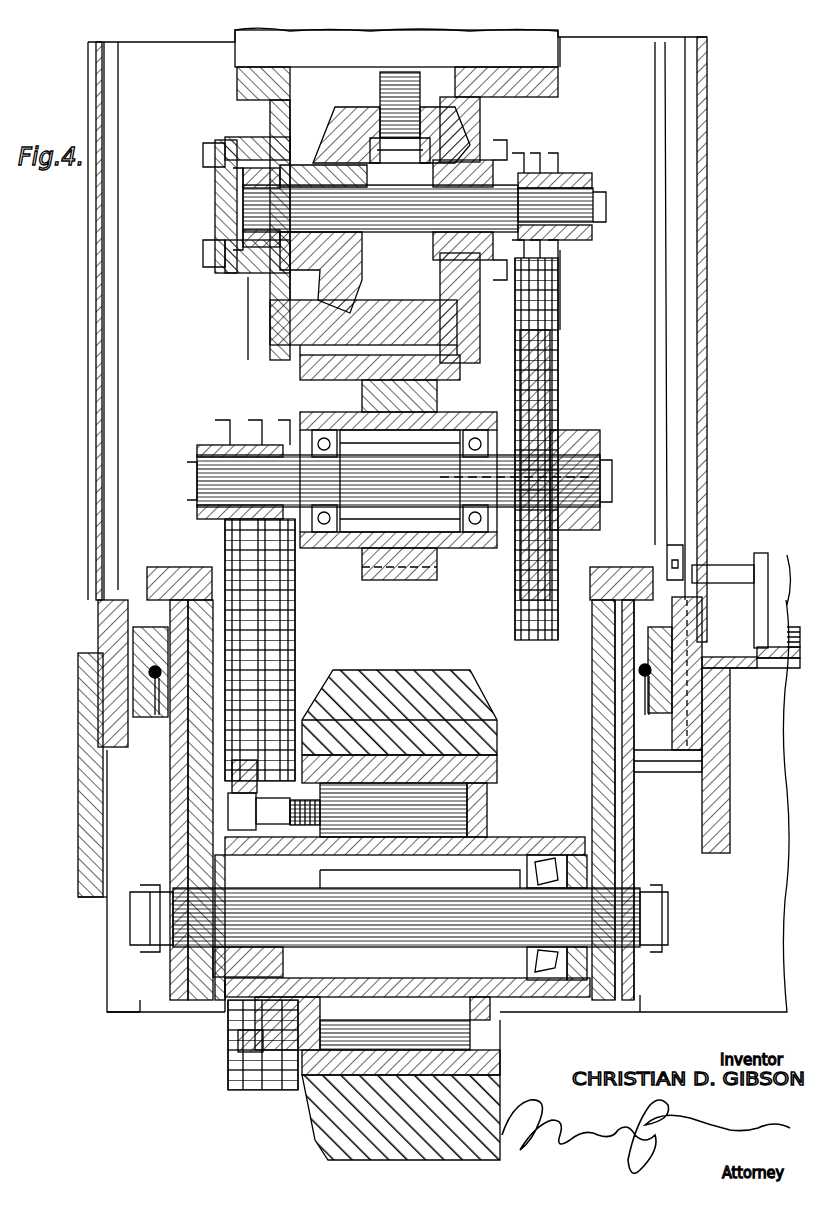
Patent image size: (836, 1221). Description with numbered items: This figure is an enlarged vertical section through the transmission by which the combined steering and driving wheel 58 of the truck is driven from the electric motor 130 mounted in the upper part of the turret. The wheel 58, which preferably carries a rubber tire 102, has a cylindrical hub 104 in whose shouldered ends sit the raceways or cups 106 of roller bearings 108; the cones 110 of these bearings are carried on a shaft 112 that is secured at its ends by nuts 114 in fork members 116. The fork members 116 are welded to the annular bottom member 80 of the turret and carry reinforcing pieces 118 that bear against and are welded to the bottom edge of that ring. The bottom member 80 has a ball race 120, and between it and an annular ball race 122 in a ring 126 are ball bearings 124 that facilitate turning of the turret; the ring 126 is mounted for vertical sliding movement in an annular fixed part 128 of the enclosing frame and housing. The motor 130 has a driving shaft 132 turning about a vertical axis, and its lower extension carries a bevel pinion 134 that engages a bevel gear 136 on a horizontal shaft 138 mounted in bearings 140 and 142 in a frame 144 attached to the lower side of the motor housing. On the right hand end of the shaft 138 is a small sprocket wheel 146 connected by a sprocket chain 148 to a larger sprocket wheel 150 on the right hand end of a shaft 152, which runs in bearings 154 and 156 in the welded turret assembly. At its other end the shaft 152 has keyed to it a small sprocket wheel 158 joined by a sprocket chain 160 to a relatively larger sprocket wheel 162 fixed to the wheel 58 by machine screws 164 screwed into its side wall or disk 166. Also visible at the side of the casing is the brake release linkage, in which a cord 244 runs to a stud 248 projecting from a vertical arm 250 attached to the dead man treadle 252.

The steering and driving wheel 58 is at (505, 1050).
The annular bottom member 80 is at (172, 570).
The rubber tire 102 is at (405, 665).
The cylindrical hub 104 is at (435, 815).
The raceways or cups 106 is at (545, 840).
The roller bearings 108 is at (572, 840).
The cones 110 is at (540, 940).
The shaft 112 is at (385, 935).
The nuts 114 is at (160, 950).
The fork members 116 is at (225, 995).
The reinforcing pieces 118 is at (170, 848).
The ball race 120 is at (150, 700).
The annular ball race 122 is at (135, 650).
The ball bearings 124 is at (148, 672).
The ring 126 is at (125, 640).
The annular fixed part 128 is at (130, 745).
The electric motor 130 is at (560, 42).
The driving shaft 132 is at (405, 77).
The bevel pinion 134 is at (375, 108).
The bevel gear 136 is at (352, 288).
The horizontal shaft 138 is at (345, 205).
The bearing 140 is at (250, 170).
The bearing 142 is at (480, 140).
The frame 144 is at (272, 328).
The small sprocket wheel 146 is at (560, 177).
The sprocket chain 148 is at (548, 290).
The larger sprocket wheel 150 is at (540, 370).
The shaft 152 is at (475, 468).
The bearing 154 is at (324, 432).
The bearing 156 is at (475, 432).
The small sprocket wheel 158 is at (210, 450).
The sprocket chain 160 is at (285, 652).
The larger sprocket wheel 162 is at (232, 778).
The machine screws 164 is at (228, 810).
The side wall or disk 166 is at (325, 805).
The cord 244 is at (665, 320).
The stud 248 is at (718, 580).
The vertical arm 250 is at (765, 558).
The dead man treadle 252 is at (784, 560).